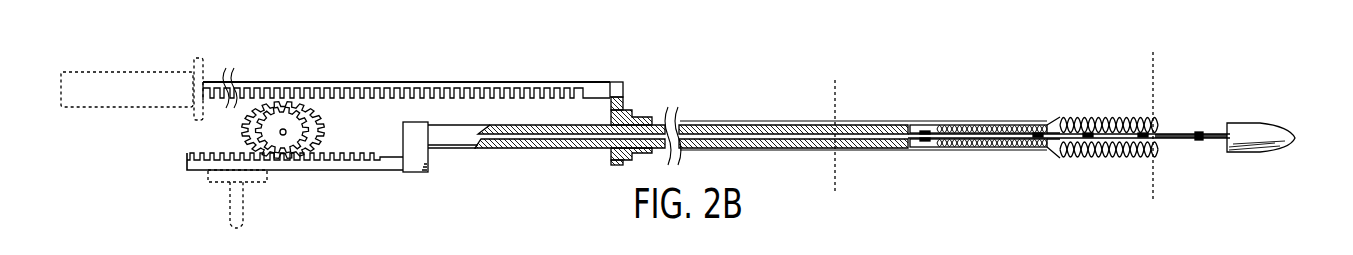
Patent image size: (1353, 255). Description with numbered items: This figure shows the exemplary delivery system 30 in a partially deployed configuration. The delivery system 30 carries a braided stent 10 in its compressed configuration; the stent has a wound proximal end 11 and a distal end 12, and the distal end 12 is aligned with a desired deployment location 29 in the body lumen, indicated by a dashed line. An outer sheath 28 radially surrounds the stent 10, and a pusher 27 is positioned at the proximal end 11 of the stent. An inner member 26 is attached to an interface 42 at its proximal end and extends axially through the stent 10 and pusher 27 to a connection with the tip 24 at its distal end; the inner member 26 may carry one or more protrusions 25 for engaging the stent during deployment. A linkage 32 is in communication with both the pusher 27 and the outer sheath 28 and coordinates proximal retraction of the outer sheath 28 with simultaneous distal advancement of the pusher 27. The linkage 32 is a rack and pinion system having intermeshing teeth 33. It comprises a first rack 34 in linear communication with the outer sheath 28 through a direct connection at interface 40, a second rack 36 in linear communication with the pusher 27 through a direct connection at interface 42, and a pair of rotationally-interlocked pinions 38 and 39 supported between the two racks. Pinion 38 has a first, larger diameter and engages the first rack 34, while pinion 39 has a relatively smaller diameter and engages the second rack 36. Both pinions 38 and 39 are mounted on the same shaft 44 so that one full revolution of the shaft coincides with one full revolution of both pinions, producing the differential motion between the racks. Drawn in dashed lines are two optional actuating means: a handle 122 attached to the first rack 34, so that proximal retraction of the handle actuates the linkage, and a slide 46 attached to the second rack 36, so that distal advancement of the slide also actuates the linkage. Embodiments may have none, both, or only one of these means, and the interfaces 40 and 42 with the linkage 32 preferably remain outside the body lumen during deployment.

The stent 10 is at (1090, 115).
The proximal end 11 is at (929, 106).
The distal end 12 is at (1138, 98).
The tip 24 is at (1280, 150).
The protrusion 25 is at (1199, 129).
The inner member 26 is at (1183, 143).
The pusher 27 is at (533, 150).
The outer sheath 28 is at (1000, 121).
The desired deployment location 29 is at (1155, 58).
The delivery system 30 is at (767, 91).
The linkage 32 is at (276, 68).
The teeth 33 is at (315, 110).
The first rack 34 is at (374, 133).
The second rack 36 is at (363, 172).
The pinion 38 is at (245, 137).
The pinion 39 is at (300, 127).
The interface 40 is at (623, 88).
The interface 42 is at (414, 173).
The shaft 44 is at (283, 137).
The slide 46 is at (232, 212).
The handle 122 is at (126, 78).